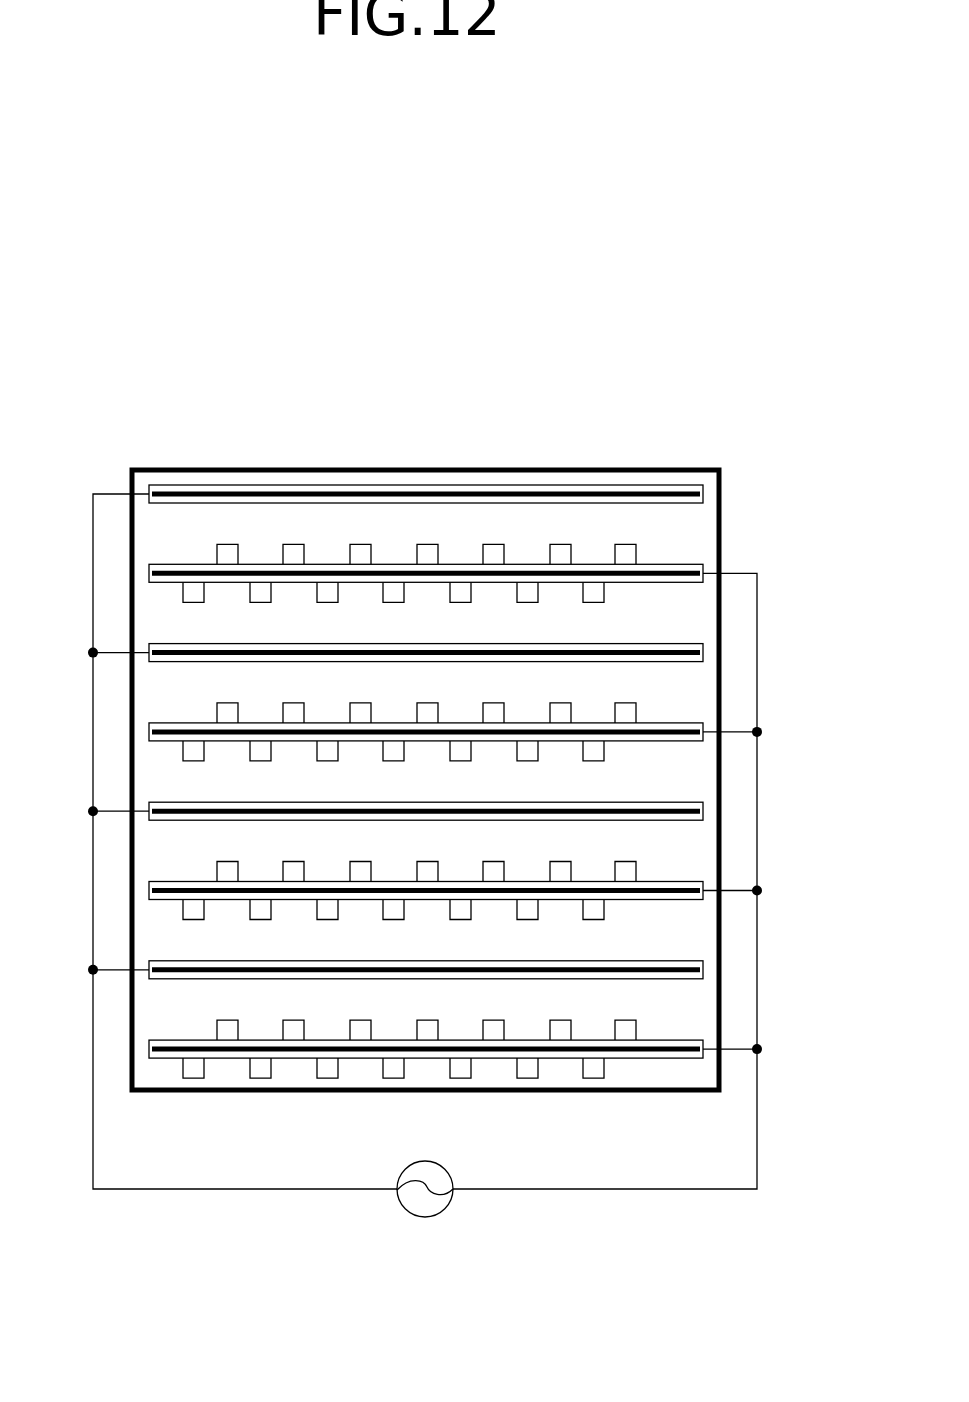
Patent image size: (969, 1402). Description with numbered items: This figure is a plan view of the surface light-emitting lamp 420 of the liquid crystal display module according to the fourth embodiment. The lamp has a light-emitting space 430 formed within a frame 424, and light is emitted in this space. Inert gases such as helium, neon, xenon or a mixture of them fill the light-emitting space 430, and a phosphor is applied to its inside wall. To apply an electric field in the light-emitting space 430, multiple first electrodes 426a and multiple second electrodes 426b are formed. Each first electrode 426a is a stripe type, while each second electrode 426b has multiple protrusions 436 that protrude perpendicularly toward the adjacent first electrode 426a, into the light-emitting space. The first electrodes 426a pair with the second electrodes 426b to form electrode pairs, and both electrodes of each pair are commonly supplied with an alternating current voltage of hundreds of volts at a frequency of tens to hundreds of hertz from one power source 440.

The surface light-emitting lamp 420 is at (693, 425).
The frame 424 is at (722, 660).
The first electrodes 426a is at (285, 485).
The second electrodes 426b is at (470, 563).
The light-emitting space 430 is at (372, 525).
The protrusions 436 is at (633, 557).
The power source 440 is at (410, 1217).